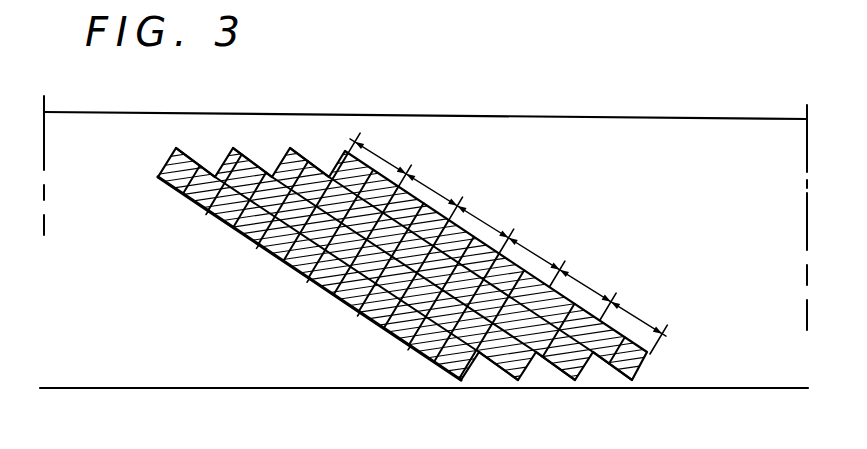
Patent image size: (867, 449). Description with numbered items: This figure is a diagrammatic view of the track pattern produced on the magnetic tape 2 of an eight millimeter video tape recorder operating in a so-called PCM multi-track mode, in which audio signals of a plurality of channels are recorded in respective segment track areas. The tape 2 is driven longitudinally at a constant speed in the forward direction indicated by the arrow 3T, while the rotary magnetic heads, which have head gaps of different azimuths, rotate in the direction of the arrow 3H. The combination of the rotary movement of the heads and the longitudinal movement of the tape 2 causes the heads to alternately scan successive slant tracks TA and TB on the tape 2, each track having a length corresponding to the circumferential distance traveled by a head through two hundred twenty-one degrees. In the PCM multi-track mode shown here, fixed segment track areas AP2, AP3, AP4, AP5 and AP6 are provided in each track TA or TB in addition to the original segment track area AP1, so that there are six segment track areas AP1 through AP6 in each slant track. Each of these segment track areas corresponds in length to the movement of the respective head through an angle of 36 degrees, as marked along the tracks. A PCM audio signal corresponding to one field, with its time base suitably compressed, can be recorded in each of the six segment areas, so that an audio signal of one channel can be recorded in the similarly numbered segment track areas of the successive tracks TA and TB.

The magnetic tape 2 is at (733, 377).
The original segment track area AP1 is at (436, 368).
The segment track area AP2 is at (392, 335).
The segment track area AP3 is at (328, 296).
The segment track area AP4 is at (292, 266).
The segment track area AP5 is at (232, 226).
The segment track area AP6 is at (186, 196).
The slant track TA is at (476, 368).
The slant track TB is at (526, 370).
The angle of head movement per segment track area 36 is at (507, 243).
The arrow indicating forward tape direction 3T is at (234, 97).
The arrow indicating head rotation direction 3H is at (121, 255).